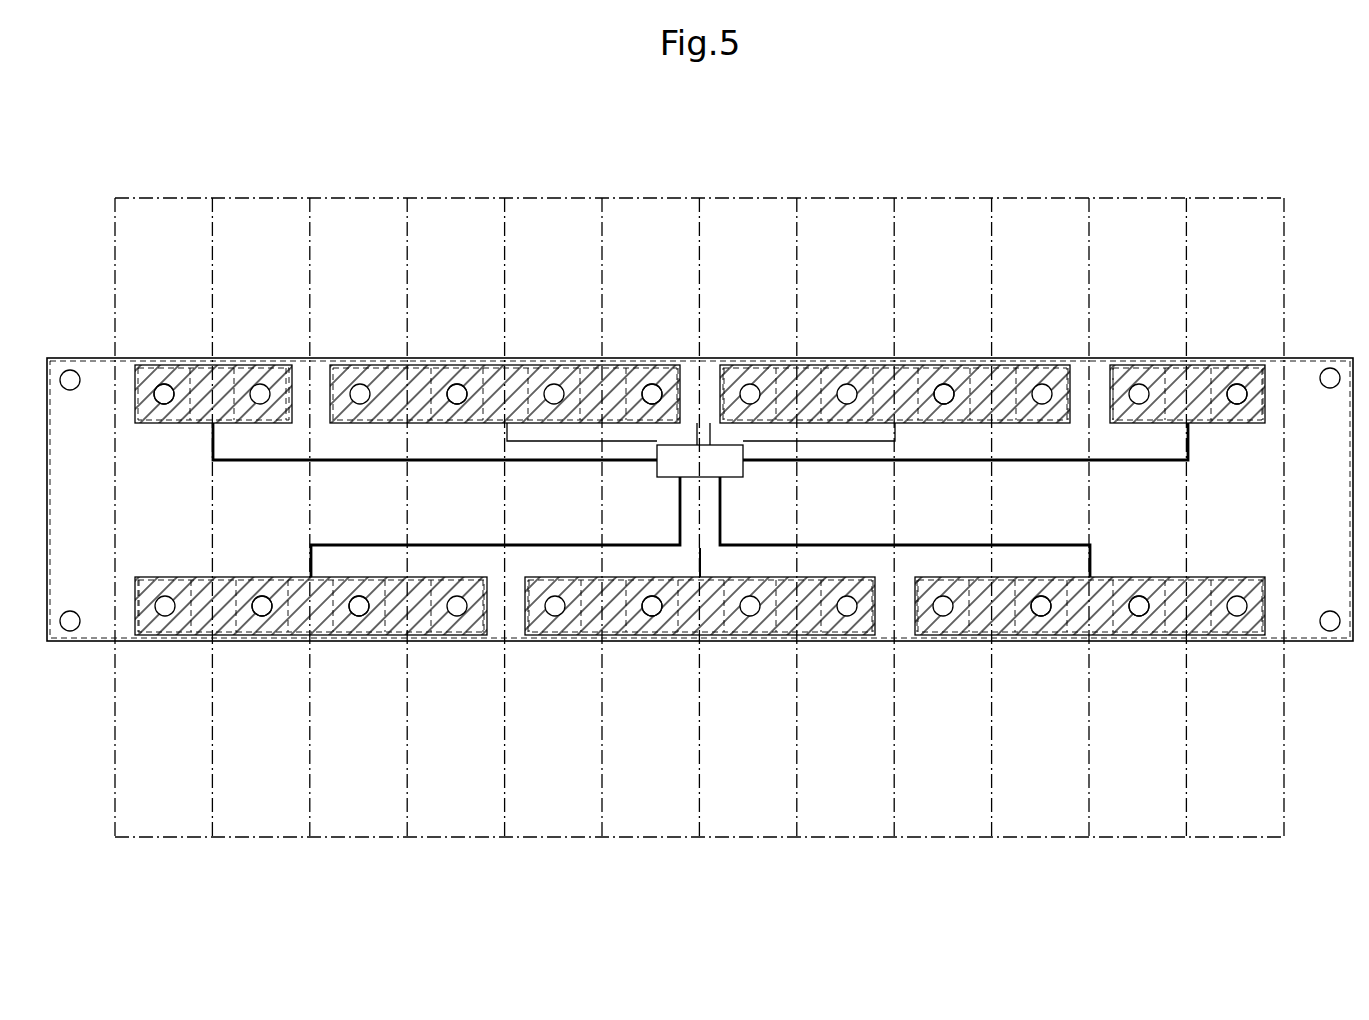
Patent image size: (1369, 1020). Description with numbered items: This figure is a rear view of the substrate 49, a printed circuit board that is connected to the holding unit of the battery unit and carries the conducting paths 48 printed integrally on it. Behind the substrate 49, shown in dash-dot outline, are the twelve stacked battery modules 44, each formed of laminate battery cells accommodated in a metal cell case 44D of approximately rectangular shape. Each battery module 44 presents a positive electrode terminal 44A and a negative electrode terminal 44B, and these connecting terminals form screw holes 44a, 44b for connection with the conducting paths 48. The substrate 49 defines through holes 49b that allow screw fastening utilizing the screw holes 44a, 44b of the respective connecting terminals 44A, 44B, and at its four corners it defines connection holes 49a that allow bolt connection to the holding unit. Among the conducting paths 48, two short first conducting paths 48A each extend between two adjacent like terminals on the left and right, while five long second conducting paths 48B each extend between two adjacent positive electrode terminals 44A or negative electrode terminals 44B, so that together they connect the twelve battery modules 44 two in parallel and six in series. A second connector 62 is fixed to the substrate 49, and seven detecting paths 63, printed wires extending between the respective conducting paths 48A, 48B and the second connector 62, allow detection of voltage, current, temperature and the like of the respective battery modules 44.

The cell case 44D is at (331, 198).
The battery module 44 is at (722, 110).
The positive electrode terminal 44A is at (238, 422).
The negative electrode terminal 44B is at (412, 403).
The screw hole 44a is at (678, 504).
The screw hole 44b is at (742, 509).
The conducting path 48 is at (701, 494).
The first conducting path 48A is at (136, 398).
The second conducting path 48B is at (512, 372).
The substrate 49 is at (152, 645).
The connection hole 49a is at (70, 369).
The through hole 49b is at (166, 384).
The second connector 62 is at (705, 455).
The detecting path 63 is at (497, 460).